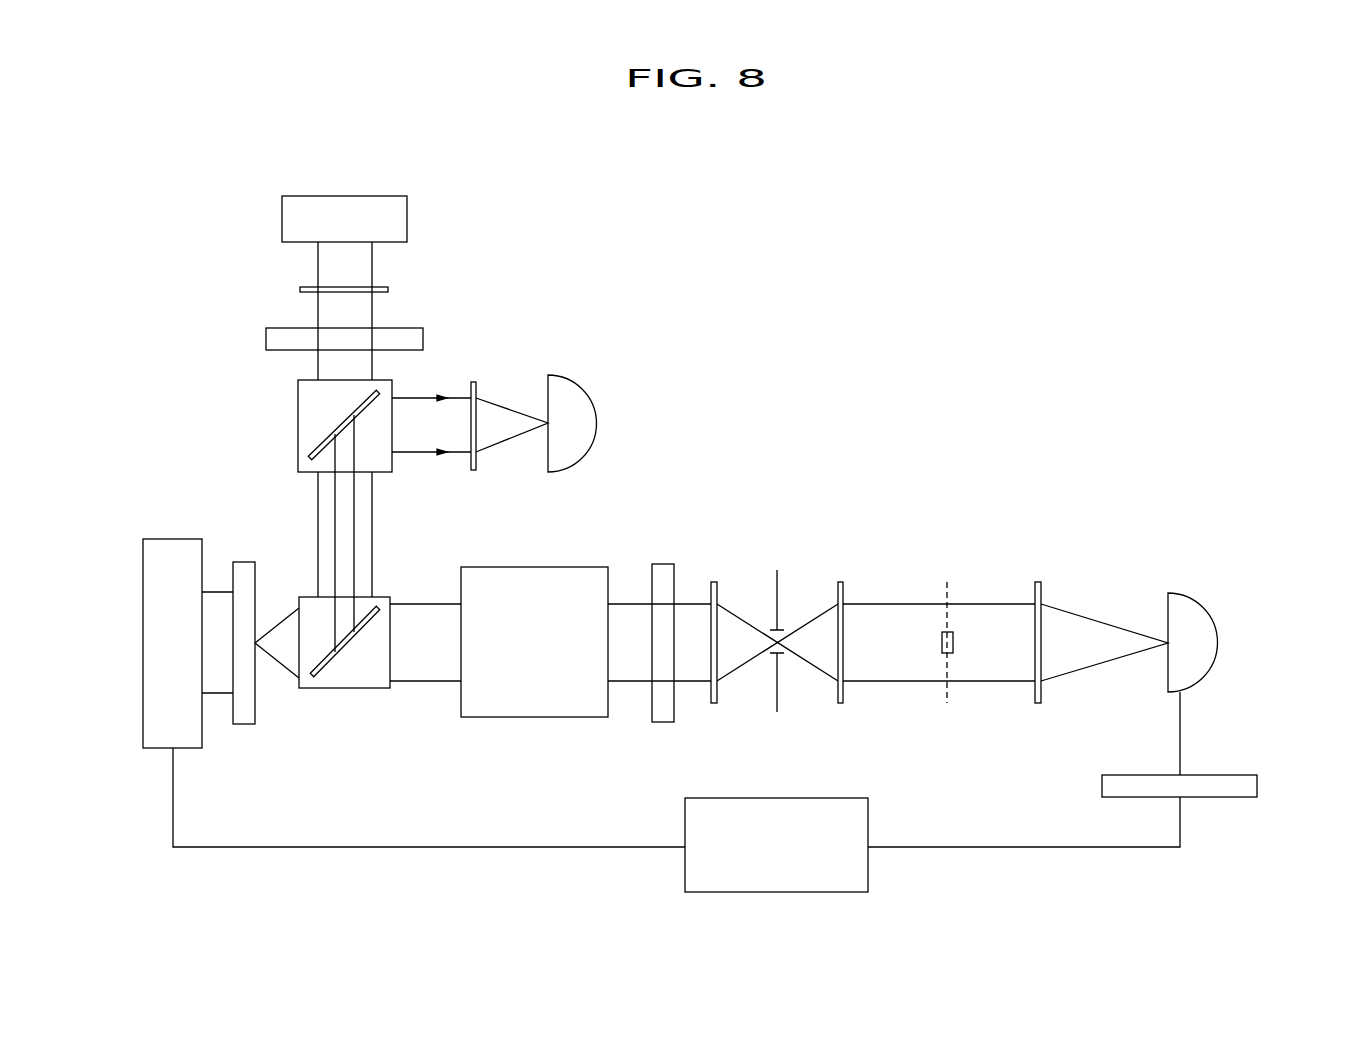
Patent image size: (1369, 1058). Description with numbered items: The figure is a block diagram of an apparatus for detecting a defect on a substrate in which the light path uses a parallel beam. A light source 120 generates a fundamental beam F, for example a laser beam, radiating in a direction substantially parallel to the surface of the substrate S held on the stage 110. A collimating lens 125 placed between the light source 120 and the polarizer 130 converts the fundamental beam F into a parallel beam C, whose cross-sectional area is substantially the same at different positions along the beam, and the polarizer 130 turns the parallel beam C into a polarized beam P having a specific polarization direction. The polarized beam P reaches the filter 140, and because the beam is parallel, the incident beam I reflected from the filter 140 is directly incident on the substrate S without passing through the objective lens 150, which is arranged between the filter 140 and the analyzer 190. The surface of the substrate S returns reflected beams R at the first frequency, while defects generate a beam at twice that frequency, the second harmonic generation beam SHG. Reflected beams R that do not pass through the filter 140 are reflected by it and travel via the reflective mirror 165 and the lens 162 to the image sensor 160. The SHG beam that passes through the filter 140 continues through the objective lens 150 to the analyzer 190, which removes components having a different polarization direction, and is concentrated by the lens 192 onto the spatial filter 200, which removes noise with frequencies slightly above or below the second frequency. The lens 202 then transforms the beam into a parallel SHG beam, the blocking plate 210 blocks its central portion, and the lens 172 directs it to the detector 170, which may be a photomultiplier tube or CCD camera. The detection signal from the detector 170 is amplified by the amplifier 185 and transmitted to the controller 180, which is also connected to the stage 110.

The stage 110 is at (143, 644).
The light source 120 is at (282, 218).
The collimating lens 125 is at (300, 290).
The polarizer 130 is at (266, 338).
The filter 140 is at (343, 688).
The objective lens 150 is at (535, 717).
The image sensor 160 is at (598, 423).
The lens 162 is at (473, 470).
The reflective mirror 165 is at (332, 430).
The detector 170 is at (1218, 643).
The lens 172 is at (1038, 703).
The controller 180 is at (868, 878).
The amplifier 185 is at (1257, 783).
The analyzer 190 is at (660, 722).
The lens 192 is at (713, 703).
The spatial filter 200 is at (780, 590).
The lens 202 is at (840, 703).
The blocking plate 210 is at (942, 645).
The fundamental beam F is at (372, 262).
The parallel beam C is at (372, 306).
The polarized beam P is at (318, 372).
The reflected beams R is at (423, 460).
The incident beam I is at (282, 672).
The substrate S is at (243, 724).
The second harmonic generation beam SHG is at (890, 604).